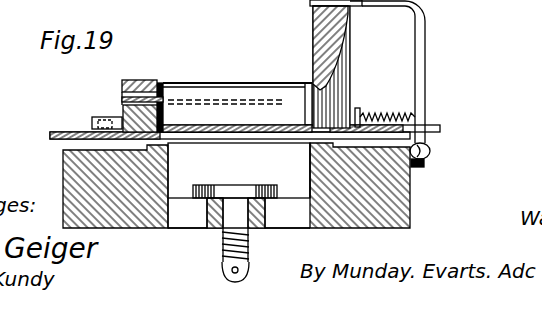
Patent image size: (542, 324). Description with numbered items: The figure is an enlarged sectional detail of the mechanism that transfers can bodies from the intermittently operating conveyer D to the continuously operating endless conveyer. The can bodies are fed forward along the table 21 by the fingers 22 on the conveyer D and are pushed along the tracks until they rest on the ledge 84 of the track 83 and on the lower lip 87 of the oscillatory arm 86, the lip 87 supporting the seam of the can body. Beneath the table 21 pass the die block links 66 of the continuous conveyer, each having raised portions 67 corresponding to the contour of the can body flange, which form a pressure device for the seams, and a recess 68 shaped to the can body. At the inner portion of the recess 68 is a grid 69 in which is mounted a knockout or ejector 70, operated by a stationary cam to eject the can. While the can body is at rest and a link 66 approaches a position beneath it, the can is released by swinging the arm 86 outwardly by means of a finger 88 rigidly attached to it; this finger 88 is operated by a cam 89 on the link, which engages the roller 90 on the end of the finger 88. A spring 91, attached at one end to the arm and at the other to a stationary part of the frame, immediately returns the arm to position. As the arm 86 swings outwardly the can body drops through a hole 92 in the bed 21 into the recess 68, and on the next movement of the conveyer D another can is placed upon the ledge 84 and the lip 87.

The table 21 is at (55, 136).
The fingers 22 is at (249, 98).
The die block links 66 is at (72, 166).
The raised portions 67 is at (311, 152).
The recesses 68 is at (239, 170).
The grid 69 is at (184, 214).
The knockout or ejector 70 is at (229, 187).
The track 83 is at (135, 80).
The ledge 84 is at (122, 97).
The oscillatory arm 86 is at (313, 28).
The lower lip 87 is at (332, 88).
The finger 88 is at (425, 64).
The cam 89 is at (426, 165).
The roller 90 is at (431, 150).
The spring 91 is at (382, 116).
The hole 92 is at (200, 132).
The intermittently operating conveyer D is at (122, 107).